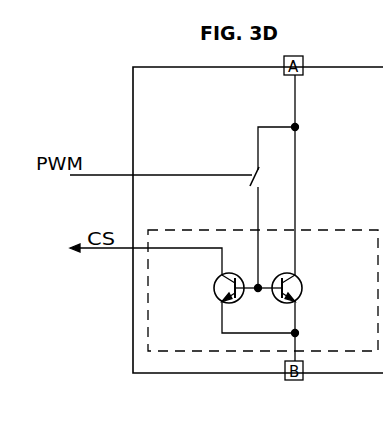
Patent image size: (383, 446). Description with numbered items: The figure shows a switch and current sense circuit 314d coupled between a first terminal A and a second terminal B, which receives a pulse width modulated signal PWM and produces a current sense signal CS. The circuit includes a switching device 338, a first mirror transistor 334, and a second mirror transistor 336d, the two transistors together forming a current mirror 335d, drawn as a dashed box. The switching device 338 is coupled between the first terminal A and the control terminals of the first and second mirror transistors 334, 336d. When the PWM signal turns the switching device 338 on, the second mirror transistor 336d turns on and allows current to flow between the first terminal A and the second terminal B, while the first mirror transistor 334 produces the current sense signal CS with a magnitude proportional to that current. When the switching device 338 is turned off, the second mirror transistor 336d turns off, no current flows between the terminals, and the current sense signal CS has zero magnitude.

The switch and current sense circuit 314d is at (133, 346).
The current mirror 335d is at (239, 229).
The switching device 338 is at (255, 173).
The first mirror transistor 334 is at (222, 291).
The second mirror transistor 336d is at (303, 291).